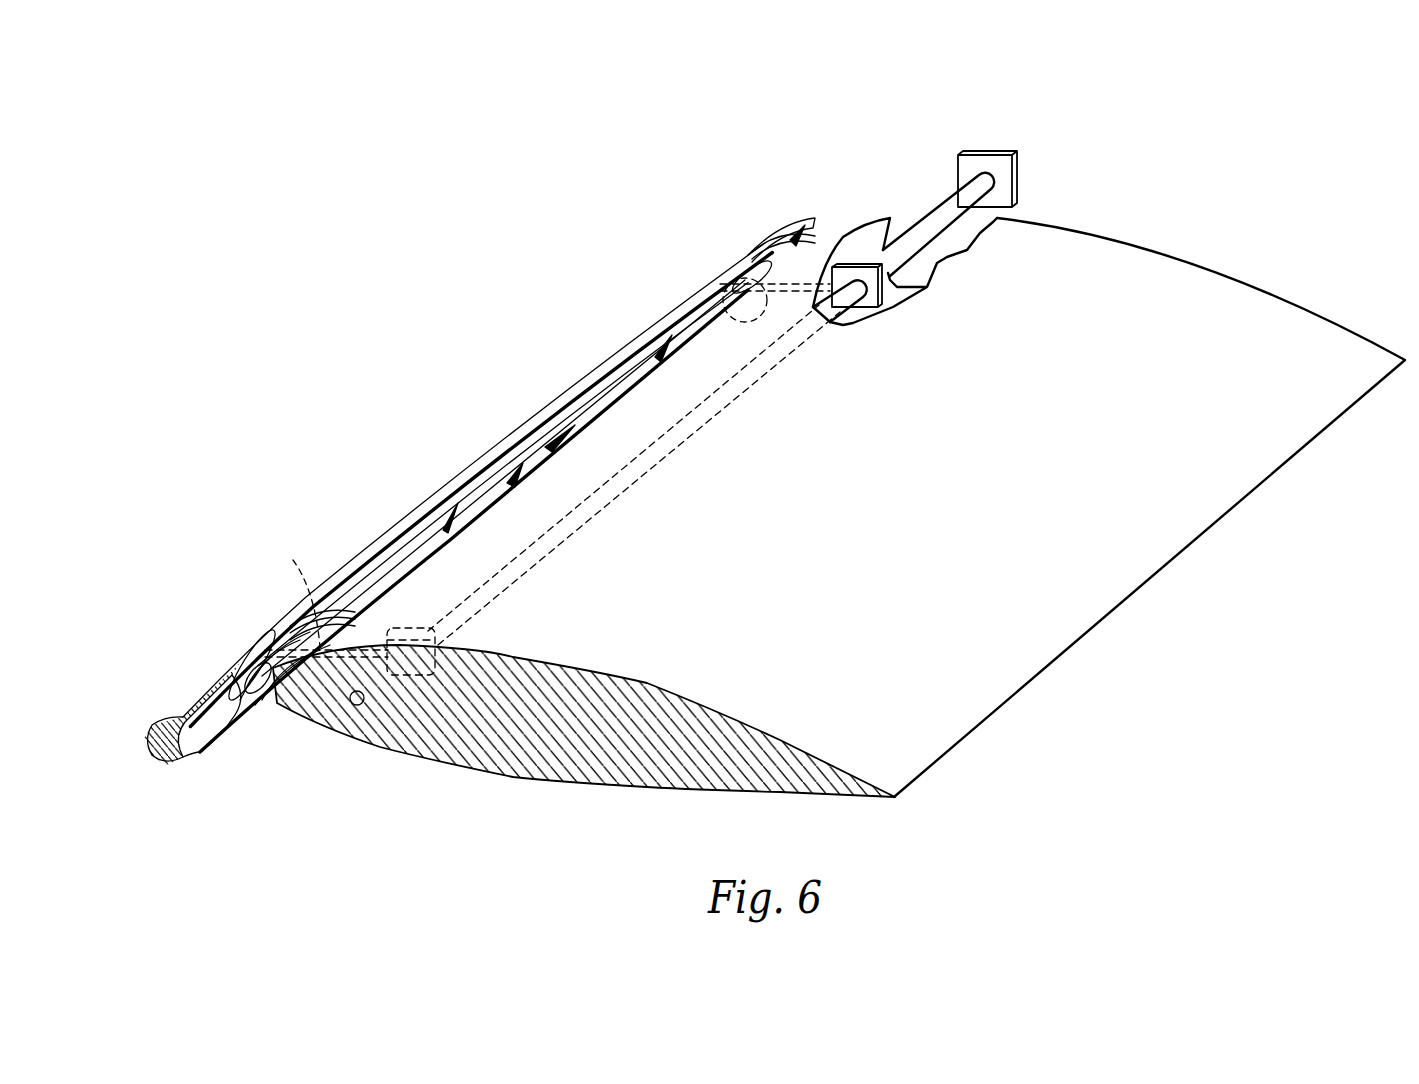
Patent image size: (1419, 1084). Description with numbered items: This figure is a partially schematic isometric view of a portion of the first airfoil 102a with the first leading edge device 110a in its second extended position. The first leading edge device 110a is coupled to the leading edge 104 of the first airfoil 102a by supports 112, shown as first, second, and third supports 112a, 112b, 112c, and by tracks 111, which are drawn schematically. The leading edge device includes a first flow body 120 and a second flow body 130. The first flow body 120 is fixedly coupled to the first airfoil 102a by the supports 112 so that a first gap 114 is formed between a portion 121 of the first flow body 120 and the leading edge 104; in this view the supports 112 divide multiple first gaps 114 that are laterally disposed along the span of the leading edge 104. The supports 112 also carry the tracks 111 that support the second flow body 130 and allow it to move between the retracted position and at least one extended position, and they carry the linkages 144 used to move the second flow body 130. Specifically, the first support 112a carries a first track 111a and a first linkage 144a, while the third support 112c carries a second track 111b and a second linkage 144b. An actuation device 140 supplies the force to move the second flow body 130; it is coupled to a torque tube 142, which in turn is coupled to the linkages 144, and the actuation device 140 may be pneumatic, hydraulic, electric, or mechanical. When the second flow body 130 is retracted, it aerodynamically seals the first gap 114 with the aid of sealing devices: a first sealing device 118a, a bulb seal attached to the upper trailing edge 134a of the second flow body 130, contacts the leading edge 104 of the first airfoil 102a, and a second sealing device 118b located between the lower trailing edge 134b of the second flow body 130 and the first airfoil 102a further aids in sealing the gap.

The first airfoil 102a is at (510, 727).
The leading edge 104 is at (284, 707).
The first leading edge device 110a is at (377, 420).
The tracks 111 is at (627, 193).
The first track 111a is at (323, 613).
The second track 111b is at (772, 245).
The supports 112 is at (503, 293).
The first support 112a is at (353, 608).
The second support 112b is at (575, 420).
The third support 112c is at (808, 226).
The first gap 114 is at (810, 240).
The first sealing device 118a is at (165, 722).
The second sealing device 118b is at (208, 753).
The first flow body 120 is at (248, 685).
The portion of the first flow body 121 is at (267, 662).
The second flow body 130 is at (164, 762).
The upper trailing edge 134a is at (230, 680).
The lower trailing edge 134b is at (213, 757).
The actuation device 140 is at (1006, 184).
The torque tube 142 is at (940, 203).
The linkages 144 is at (283, 493).
The first linkage 144a is at (313, 607).
The second linkage 144b is at (700, 297).